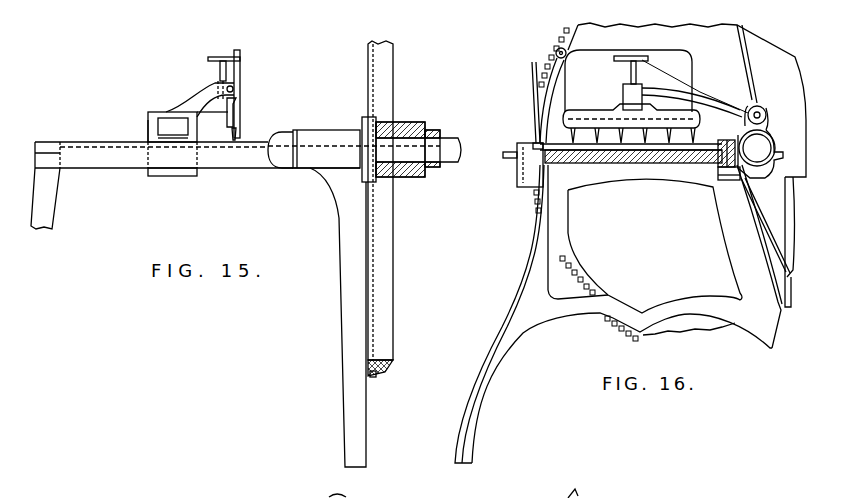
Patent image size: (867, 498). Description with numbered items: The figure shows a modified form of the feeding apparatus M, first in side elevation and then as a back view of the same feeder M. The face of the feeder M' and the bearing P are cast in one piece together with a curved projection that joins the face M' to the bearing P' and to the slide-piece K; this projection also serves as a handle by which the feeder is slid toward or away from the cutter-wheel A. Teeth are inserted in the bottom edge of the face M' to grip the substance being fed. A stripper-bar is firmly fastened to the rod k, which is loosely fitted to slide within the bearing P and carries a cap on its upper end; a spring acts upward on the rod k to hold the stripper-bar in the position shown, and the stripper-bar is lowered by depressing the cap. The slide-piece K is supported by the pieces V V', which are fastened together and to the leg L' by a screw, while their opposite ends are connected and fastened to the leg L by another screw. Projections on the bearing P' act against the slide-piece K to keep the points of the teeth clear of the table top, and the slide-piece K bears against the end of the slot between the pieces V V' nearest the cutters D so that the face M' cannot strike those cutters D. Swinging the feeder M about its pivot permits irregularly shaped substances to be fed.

In FIG. 15, the supporting piece V is at (197, 155).
In FIG. 15, the leg L' is at (45, 198).
In FIG. 15, the bearing P' is at (172, 144).
In FIG. 15, the slide-piece K is at (147, 140).
In FIG. 15, the feeding apparatus M is at (200, 94).
In FIG. 15, the rod k is at (220, 74).
In FIG. 16, the rod k is at (630, 73).
In FIG. 15, the face of the feeder M' is at (244, 107).
In FIG. 16, the face of the feeder M' is at (633, 135).
In FIG. 15, the cutter-wheel A is at (380, 209).
In FIG. 16, the cutter-wheel A is at (618, 314).
In FIG. 15, the leg L is at (338, 317).
In FIG. 16, the bearing P is at (632, 97).
In FIG. 16, the cutters D is at (743, 142).